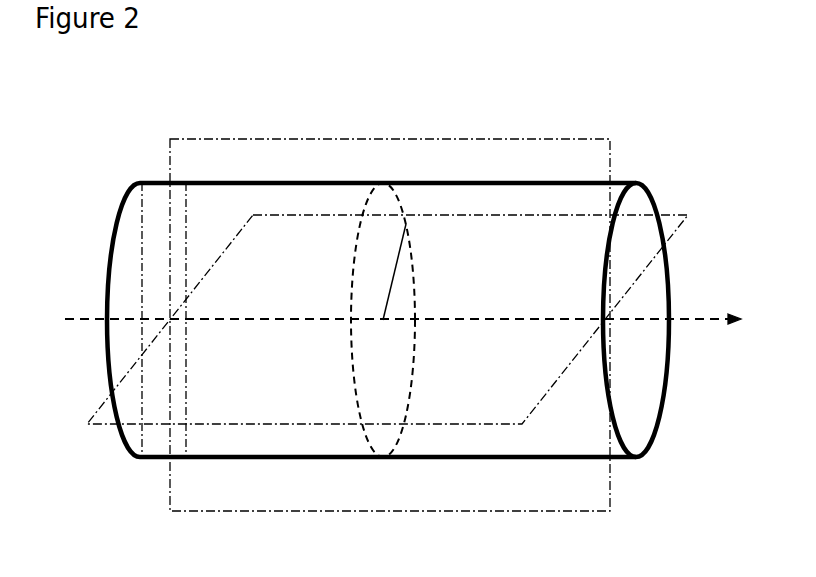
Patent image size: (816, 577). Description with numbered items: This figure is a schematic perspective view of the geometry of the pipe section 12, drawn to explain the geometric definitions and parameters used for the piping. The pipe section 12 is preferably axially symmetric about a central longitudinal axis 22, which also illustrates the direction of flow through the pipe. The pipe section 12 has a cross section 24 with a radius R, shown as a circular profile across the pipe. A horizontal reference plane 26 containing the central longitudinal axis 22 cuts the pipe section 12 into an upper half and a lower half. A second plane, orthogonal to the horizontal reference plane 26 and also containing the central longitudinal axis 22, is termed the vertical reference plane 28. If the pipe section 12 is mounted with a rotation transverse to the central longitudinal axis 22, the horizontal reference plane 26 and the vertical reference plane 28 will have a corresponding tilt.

The pipe section 12 is at (618, 178).
The central longitudinal axis 22 is at (680, 320).
The cross section 24 is at (350, 345).
The horizontal reference plane 26 is at (527, 390).
The vertical reference plane 28 is at (580, 500).